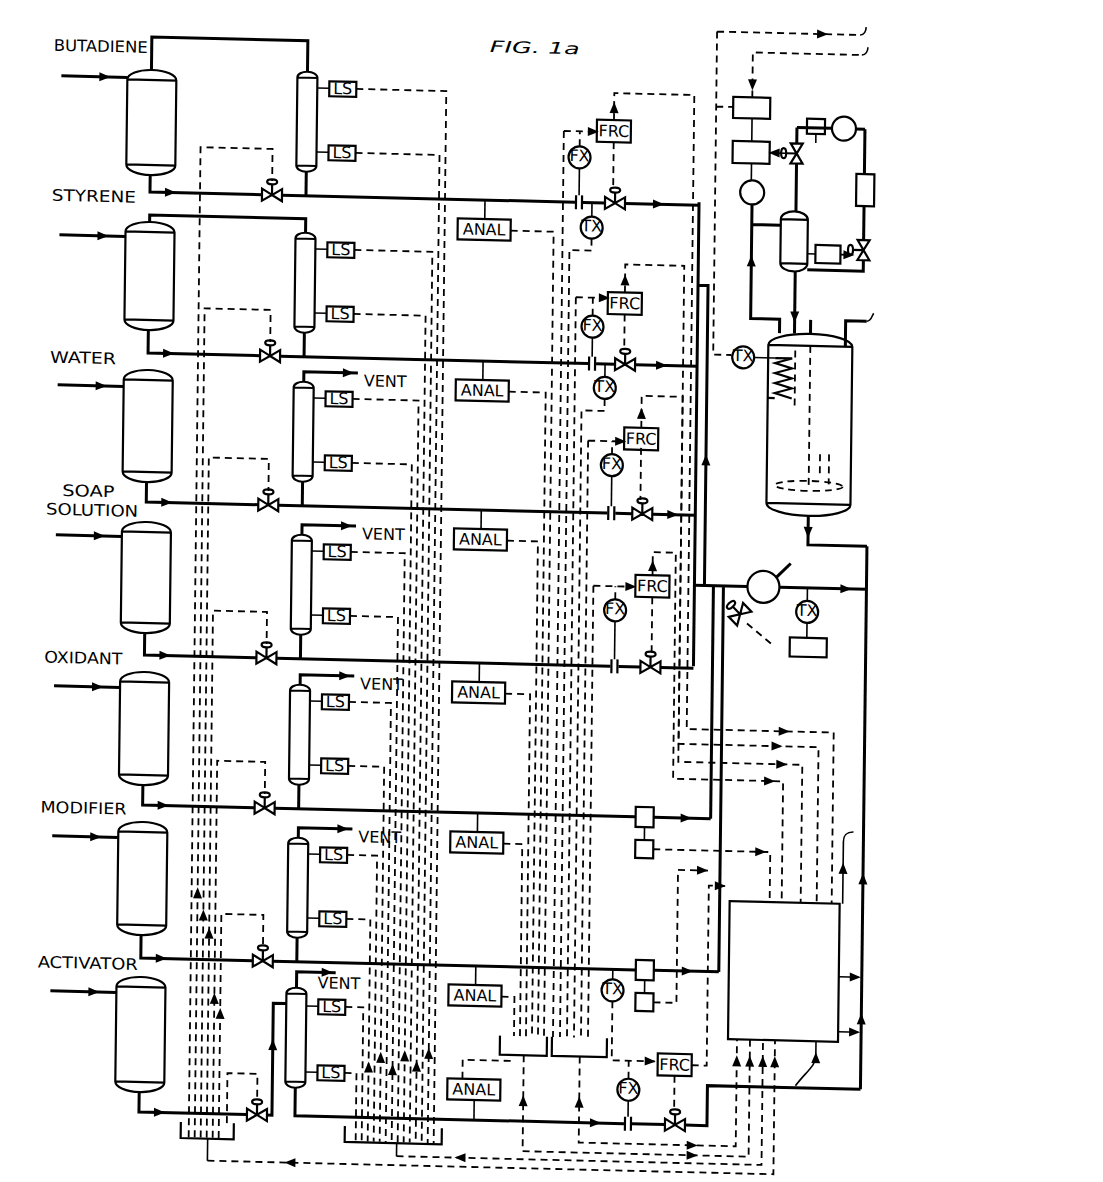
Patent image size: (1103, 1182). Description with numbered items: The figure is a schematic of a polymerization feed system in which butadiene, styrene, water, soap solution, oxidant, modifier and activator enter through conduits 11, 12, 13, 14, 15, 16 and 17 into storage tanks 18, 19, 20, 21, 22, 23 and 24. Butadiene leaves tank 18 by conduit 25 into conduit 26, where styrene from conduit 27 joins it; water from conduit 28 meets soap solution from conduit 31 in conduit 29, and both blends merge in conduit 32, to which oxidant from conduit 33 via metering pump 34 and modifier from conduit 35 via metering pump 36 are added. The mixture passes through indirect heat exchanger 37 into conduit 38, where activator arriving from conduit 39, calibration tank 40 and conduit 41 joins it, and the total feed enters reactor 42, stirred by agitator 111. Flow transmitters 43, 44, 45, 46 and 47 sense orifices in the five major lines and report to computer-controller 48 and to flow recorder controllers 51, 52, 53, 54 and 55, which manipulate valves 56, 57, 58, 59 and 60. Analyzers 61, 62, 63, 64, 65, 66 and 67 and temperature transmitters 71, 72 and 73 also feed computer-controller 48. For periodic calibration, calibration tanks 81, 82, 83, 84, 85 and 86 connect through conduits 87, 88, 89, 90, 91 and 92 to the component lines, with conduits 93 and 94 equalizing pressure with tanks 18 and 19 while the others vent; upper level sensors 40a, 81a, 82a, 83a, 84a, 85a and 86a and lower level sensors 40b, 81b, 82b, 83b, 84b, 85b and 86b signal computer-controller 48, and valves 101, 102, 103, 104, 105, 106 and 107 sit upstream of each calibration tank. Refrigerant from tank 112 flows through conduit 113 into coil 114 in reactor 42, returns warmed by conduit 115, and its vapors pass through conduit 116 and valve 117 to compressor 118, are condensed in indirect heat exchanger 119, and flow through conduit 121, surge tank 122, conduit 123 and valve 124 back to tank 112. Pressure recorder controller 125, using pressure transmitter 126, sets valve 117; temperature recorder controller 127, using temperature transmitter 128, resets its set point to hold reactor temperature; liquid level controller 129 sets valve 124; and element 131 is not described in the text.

The conduit 11 is at (82, 80).
The conduit 12 is at (82, 239).
The conduit 13 is at (82, 389).
The conduit 14 is at (82, 539).
The conduit 15 is at (82, 690).
The conduit 16 is at (82, 840).
The conduit 17 is at (82, 995).
The storage tank 18 is at (141, 130).
The storage tank 19 is at (141, 282).
The storage tank 20 is at (141, 430).
The storage tank 21 is at (141, 582).
The storage tank 22 is at (141, 732).
The storage tank 23 is at (141, 882).
The storage tank 24 is at (141, 1037).
The conduit 25 is at (251, 186).
The conduit 26 is at (708, 420).
The conduit 27 is at (251, 347).
The conduit 28 is at (251, 496).
The conduit 29 is at (708, 549).
The conduit 31 is at (251, 649).
The conduit 32 is at (710, 570).
The conduit 33 is at (251, 799).
The metering pump 34 is at (648, 795).
The conduit 35 is at (251, 952).
The metering pump 36 is at (650, 948).
The indirect heat exchanger 37 is at (786, 570).
The conduit 38 is at (824, 570).
The conduit 39 is at (150, 1116).
The calibration tank 40 is at (283, 1026).
The upper liquid level sensor 40a is at (356, 1010).
The lower liquid level sensor 40b is at (352, 1078).
The conduit 41 is at (722, 1094).
The reactor 42 is at (756, 504).
The flow transmitter 43 is at (590, 145).
The flow transmitter 44 is at (605, 314).
The flow transmitter 45 is at (626, 452).
The flow transmitter 46 is at (621, 578).
The flow transmitter 47 is at (628, 1076).
The computer-controller 48 is at (781, 932).
The flow recorder controller 51 is at (632, 112).
The flow recorder controller 52 is at (644, 282).
The flow recorder controller 53 is at (661, 419).
The flow recorder controller 54 is at (647, 560).
The flow recorder controller 55 is at (680, 1040).
The valve 56 is at (619, 178).
The valve 57 is at (631, 339).
The valve 58 is at (650, 490).
The valve 59 is at (658, 662).
The valve 60 is at (680, 1108).
The analyzer 61 is at (500, 233).
The analyzer 62 is at (500, 394).
The analyzer 63 is at (500, 543).
The analyzer 64 is at (500, 696).
The analyzer 65 is at (500, 846).
The analyzer 66 is at (500, 999).
The analyzer 67 is at (470, 1068).
The temperature transmitter 71 is at (603, 220).
The temperature transmitter 72 is at (618, 376).
The temperature transmitter 73 is at (631, 988).
The calibration tank 81 is at (296, 113).
The upper liquid level sensor 81a is at (356, 92).
The lower liquid level sensor 81b is at (356, 156).
The calibration tank 82 is at (296, 274).
The upper liquid level sensor 82a is at (356, 253).
The lower liquid level sensor 82b is at (356, 317).
The calibration tank 83 is at (296, 423).
The upper liquid level sensor 83a is at (356, 402).
The lower liquid level sensor 83b is at (356, 466).
The calibration tank 84 is at (296, 576).
The upper liquid level sensor 84a is at (356, 555).
The lower liquid level sensor 84b is at (356, 619).
The calibration tank 85 is at (296, 726).
The upper liquid level sensor 85a is at (356, 705).
The lower liquid level sensor 85b is at (356, 769).
The calibration tank 86 is at (296, 879).
The upper liquid level sensor 86a is at (356, 858).
The lower liquid level sensor 86b is at (356, 922).
The conduit 87 is at (310, 194).
The conduit 88 is at (306, 358).
The conduit 89 is at (306, 507).
The conduit 90 is at (306, 660).
The conduit 91 is at (306, 810).
The conduit 92 is at (306, 963).
The conduit 93 is at (244, 38).
The conduit 94 is at (244, 215).
The valve 101 is at (268, 196).
The valve 102 is at (268, 357).
The valve 103 is at (268, 506).
The valve 104 is at (268, 659).
The valve 105 is at (268, 809).
The valve 106 is at (268, 962).
The valve 107 is at (268, 1117).
The agitator 111 is at (812, 418).
The tank 112 is at (783, 254).
The conduit 113 is at (796, 282).
The coil 114 is at (777, 382).
The conduit 115 is at (752, 308).
The conduit 116 is at (797, 162).
The valve 117 is at (799, 140).
The compressor 118 is at (813, 102).
The indirect heat exchanger 119 is at (836, 102).
The conduit 121 is at (864, 112).
The surge tank 122 is at (856, 182).
The conduit 123 is at (864, 251).
The valve 124 is at (858, 231).
The pressure recorder controller 125 is at (758, 114).
The pressure transmitter 126 is at (740, 178).
The temperature recorder controller 127 is at (754, 86).
The temperature transmitter 128 is at (750, 352).
The liquid level controller 129 is at (827, 254).
The vent line 131 is at (865, 334).